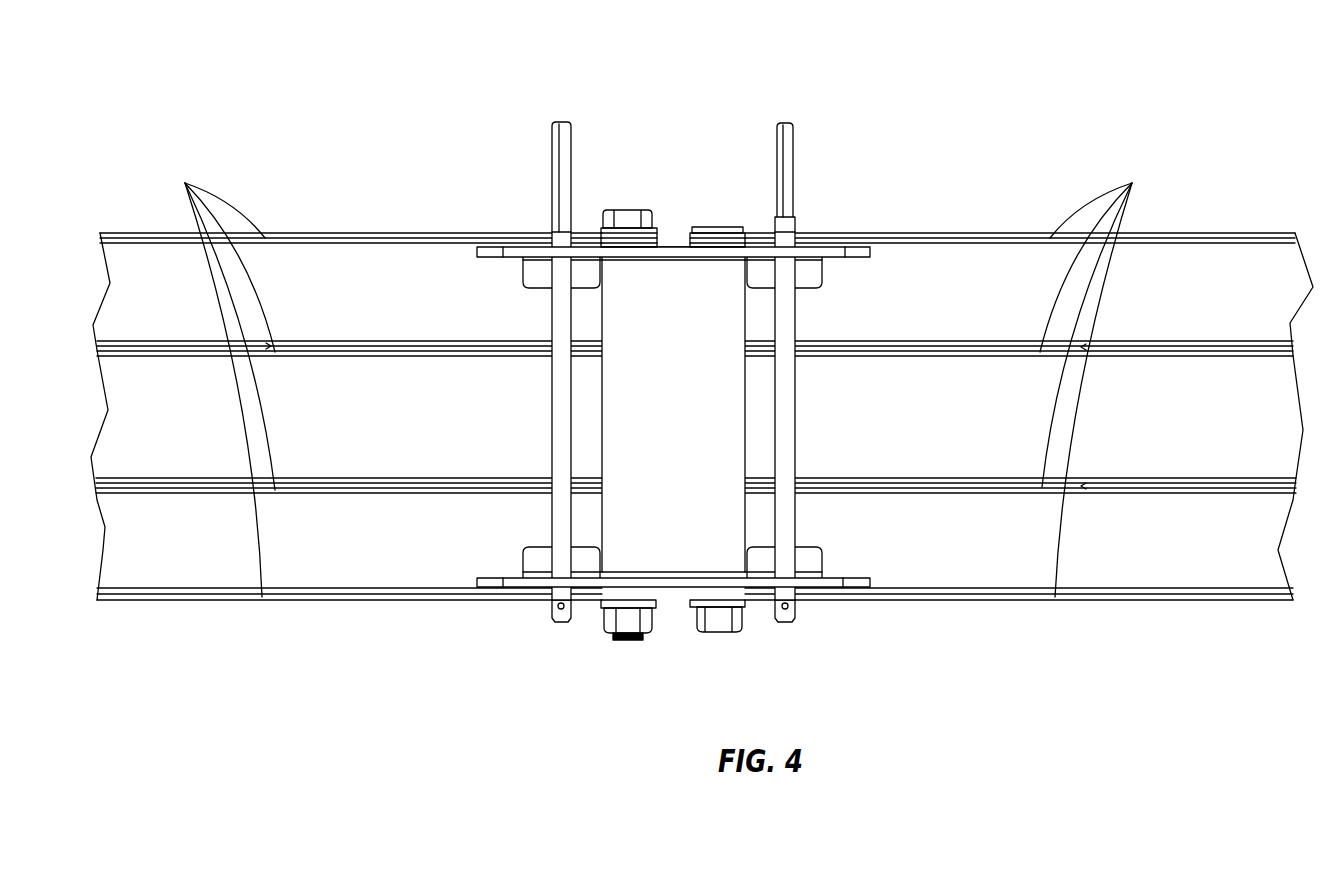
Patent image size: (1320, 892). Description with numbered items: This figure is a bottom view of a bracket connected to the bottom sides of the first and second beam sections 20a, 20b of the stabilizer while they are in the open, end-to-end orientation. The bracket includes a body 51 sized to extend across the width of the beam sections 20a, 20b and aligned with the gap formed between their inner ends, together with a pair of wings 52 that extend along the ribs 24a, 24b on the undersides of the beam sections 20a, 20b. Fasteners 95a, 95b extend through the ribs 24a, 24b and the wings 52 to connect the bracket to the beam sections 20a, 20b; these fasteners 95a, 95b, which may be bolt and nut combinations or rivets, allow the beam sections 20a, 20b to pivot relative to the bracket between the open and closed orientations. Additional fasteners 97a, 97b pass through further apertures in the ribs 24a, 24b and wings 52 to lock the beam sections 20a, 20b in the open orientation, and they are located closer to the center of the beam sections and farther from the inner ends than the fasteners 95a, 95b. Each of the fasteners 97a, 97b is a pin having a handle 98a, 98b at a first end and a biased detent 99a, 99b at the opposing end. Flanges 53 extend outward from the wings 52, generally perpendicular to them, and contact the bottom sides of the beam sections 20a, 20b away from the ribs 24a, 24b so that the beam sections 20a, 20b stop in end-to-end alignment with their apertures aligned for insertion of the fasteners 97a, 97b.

The first beam section 20a is at (385, 272).
The second beam section 20b is at (913, 282).
The rib of first beam section 24a is at (210, 384).
The rib of second beam section 24b is at (1105, 384).
The body 51 is at (668, 537).
The wings 52 is at (838, 257).
The flanges 53 is at (585, 272).
The first fastener 95a is at (627, 212).
The second fastener 95b is at (720, 230).
The first securing fastener 97a is at (565, 525).
The second securing fastener 97b is at (782, 517).
The handle of first securing fastener 98a is at (558, 135).
The handle of second securing fastener 98b is at (790, 143).
The biased detent of first securing fastener 99a is at (560, 608).
The biased detent of second securing fastener 99b is at (788, 607).